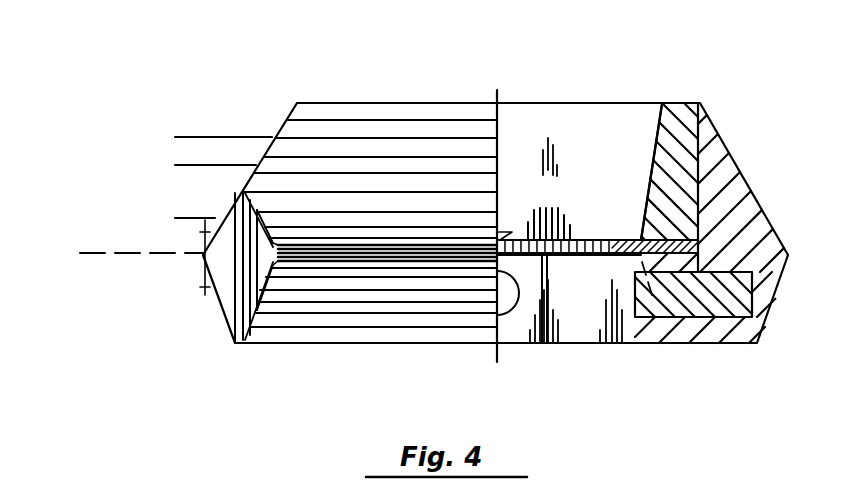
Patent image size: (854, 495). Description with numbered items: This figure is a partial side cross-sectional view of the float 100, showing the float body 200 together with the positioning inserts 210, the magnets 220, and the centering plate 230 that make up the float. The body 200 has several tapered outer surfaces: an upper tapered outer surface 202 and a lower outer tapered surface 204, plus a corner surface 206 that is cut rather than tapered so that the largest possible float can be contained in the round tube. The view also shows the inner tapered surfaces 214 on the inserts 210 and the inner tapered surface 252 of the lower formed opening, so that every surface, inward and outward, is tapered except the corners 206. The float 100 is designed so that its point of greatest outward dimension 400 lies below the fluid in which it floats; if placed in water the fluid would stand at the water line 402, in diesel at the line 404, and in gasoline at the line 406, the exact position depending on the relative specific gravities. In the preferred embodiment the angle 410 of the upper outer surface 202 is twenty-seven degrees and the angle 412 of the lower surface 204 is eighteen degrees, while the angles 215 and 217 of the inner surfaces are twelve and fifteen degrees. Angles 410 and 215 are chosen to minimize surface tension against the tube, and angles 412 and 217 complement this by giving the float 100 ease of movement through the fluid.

The float 100 is at (579, 93).
The float body 200 is at (333, 103).
The upper tapered outer surface 202 is at (437, 150).
The lower outer tapered surface 204 is at (430, 305).
The corner surface 206 is at (235, 300).
The positioning inserts 210 is at (673, 150).
The inner tapered surfaces 214 is at (647, 182).
The angle of inner tapered surface 215 is at (640, 195).
The angle of inner tapered surface 217 is at (652, 275).
The magnets 220 is at (642, 318).
The centering plate 230 is at (627, 239).
The inner tapered surface of lower formed opening 252 is at (655, 340).
The point of greatest outward dimension 400 is at (122, 258).
The water line 402 is at (190, 218).
The diesel line 404 is at (205, 165).
The gasoline line 406 is at (204, 137).
The angle of upper outer surface 410 is at (205, 232).
The angle of lower surface 412 is at (205, 287).